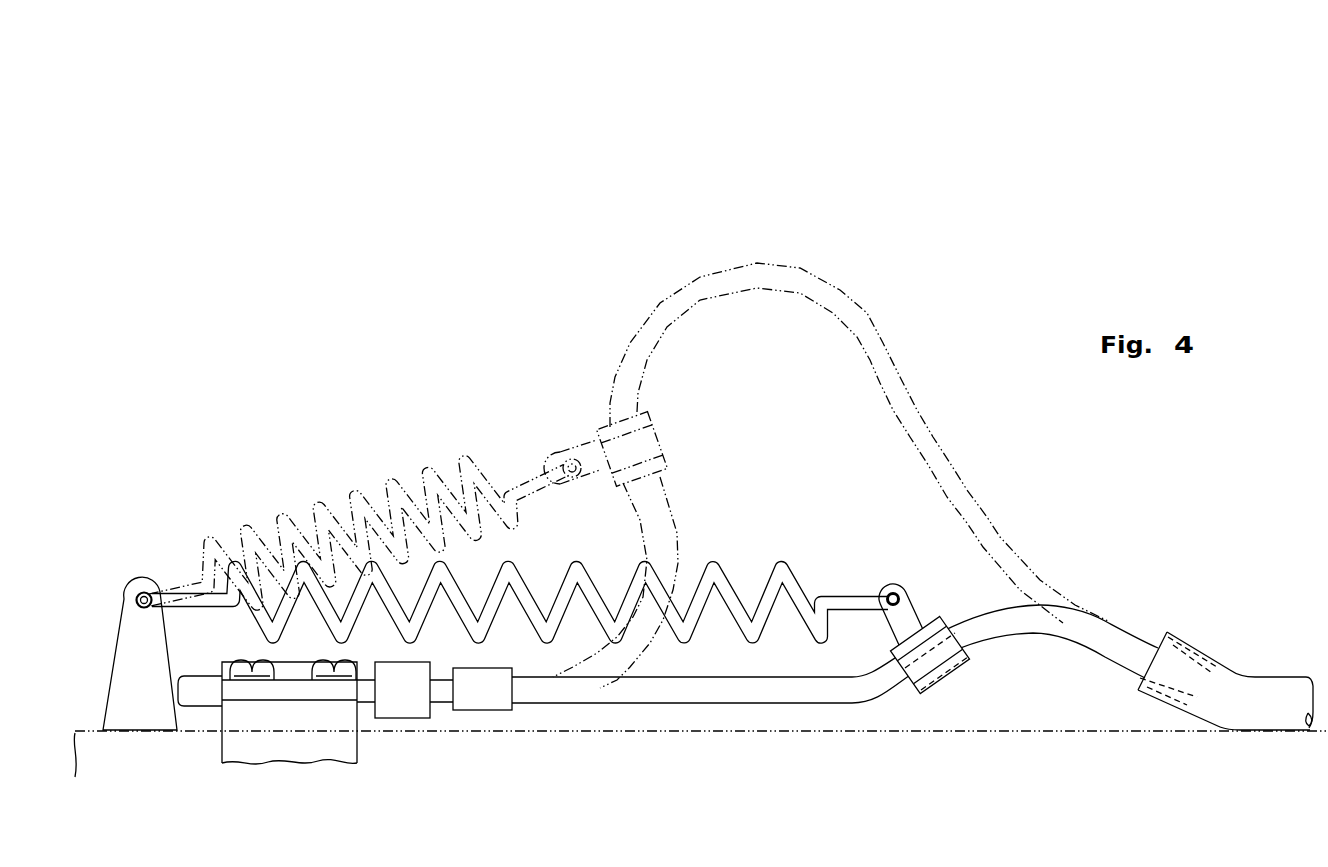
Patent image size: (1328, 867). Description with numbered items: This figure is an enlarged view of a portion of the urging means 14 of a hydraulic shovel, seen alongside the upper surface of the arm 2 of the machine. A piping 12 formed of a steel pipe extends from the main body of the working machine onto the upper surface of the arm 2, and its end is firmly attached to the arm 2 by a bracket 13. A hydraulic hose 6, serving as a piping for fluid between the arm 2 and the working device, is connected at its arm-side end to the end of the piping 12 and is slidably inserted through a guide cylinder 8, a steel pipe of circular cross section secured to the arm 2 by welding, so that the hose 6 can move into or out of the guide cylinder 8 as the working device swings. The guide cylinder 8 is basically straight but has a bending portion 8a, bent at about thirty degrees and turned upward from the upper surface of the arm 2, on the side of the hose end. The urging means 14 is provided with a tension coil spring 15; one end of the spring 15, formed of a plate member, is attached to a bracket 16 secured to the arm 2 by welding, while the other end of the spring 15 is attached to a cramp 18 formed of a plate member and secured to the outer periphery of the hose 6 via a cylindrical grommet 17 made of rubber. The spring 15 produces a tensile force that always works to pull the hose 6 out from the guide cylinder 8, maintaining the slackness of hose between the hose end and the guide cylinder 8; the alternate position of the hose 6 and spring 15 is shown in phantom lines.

The arm 2 is at (1012, 728).
The hydraulic hose 6 is at (833, 706).
The guide cylinder 8 is at (1250, 664).
The bending portion 8a is at (1163, 701).
The piping 12 is at (205, 675).
The bracket 13 is at (222, 752).
The urging means 14 is at (388, 462).
The tension coil spring 15 is at (793, 575).
The bracket 16 is at (142, 578).
The cylindrical grommet 17 is at (950, 625).
The cramp 18 is at (902, 590).